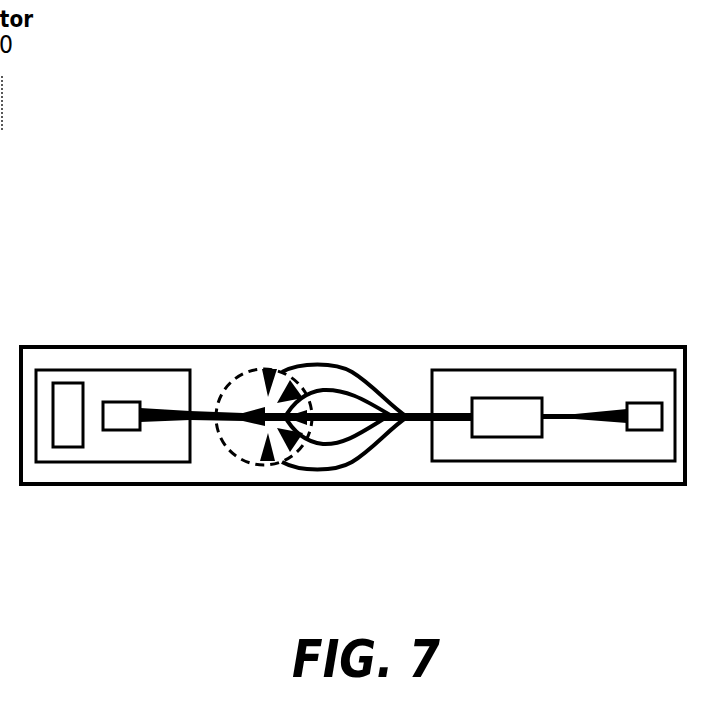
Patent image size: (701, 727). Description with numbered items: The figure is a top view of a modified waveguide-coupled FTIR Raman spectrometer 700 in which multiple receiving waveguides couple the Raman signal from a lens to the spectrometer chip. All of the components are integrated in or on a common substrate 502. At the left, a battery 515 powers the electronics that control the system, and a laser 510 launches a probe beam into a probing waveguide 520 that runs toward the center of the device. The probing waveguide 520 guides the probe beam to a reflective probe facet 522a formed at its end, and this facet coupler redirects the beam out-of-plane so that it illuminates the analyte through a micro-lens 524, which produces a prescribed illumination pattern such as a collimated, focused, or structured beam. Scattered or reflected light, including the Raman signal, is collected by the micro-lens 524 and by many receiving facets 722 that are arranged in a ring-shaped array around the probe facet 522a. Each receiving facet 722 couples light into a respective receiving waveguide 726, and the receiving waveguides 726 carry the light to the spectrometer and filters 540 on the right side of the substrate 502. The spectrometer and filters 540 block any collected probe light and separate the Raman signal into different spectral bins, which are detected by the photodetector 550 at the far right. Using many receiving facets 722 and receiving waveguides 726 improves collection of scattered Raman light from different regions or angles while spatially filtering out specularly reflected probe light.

The modified spectrometer 700 is at (419, 220).
The substrate 502 is at (56, 484).
The battery 515 is at (68, 382).
The laser 510 is at (122, 400).
The probing waveguide 520 is at (205, 424).
The micro-lens 524 is at (250, 464).
The probe facet 522a is at (254, 405).
The receiving facets 722 is at (283, 386).
The receiving waveguides 726 is at (365, 453).
The spectrometer and filters 540 is at (543, 442).
The photodetector 550 is at (643, 391).